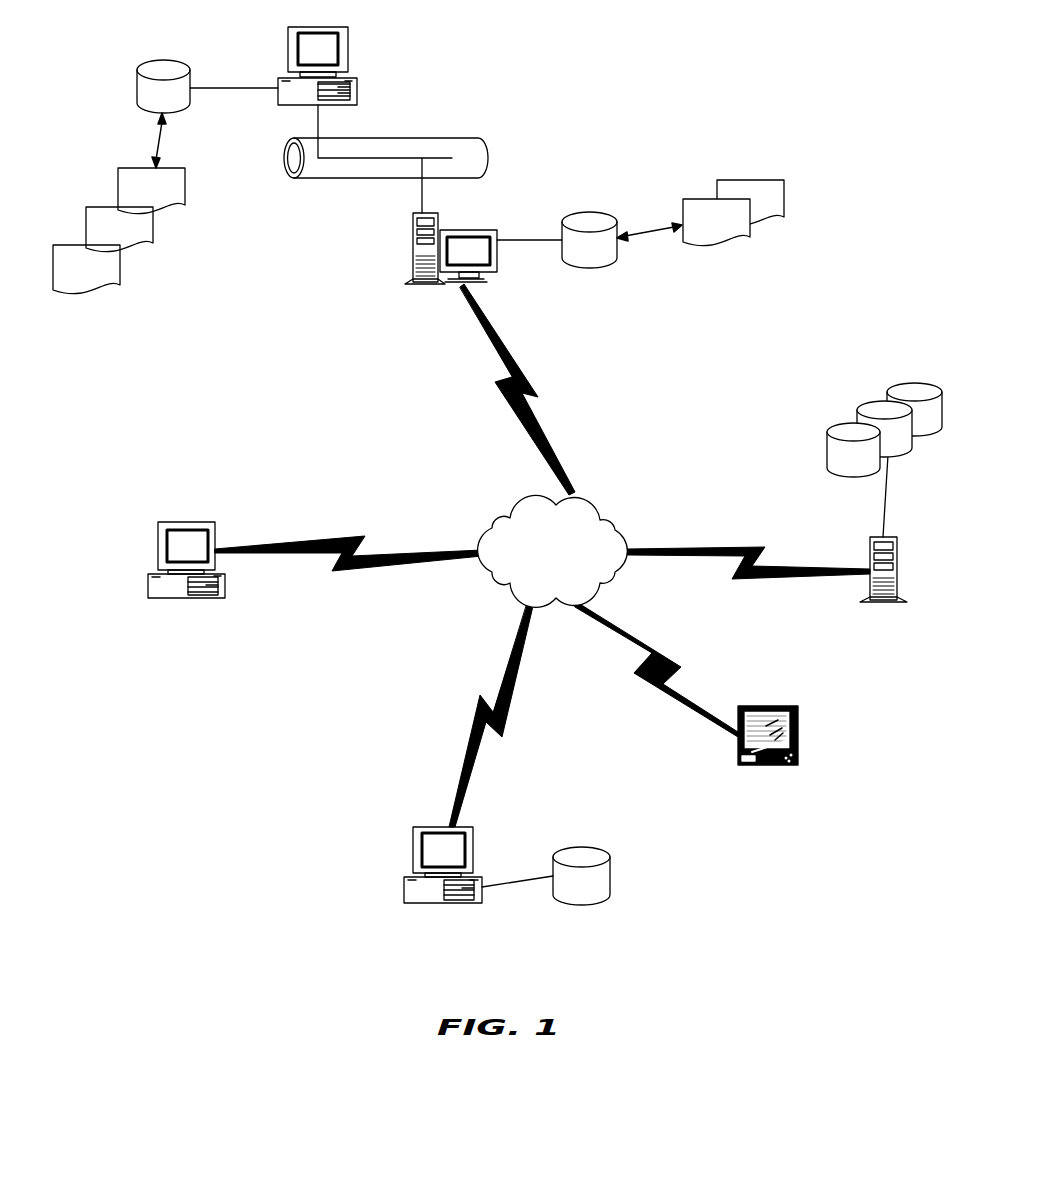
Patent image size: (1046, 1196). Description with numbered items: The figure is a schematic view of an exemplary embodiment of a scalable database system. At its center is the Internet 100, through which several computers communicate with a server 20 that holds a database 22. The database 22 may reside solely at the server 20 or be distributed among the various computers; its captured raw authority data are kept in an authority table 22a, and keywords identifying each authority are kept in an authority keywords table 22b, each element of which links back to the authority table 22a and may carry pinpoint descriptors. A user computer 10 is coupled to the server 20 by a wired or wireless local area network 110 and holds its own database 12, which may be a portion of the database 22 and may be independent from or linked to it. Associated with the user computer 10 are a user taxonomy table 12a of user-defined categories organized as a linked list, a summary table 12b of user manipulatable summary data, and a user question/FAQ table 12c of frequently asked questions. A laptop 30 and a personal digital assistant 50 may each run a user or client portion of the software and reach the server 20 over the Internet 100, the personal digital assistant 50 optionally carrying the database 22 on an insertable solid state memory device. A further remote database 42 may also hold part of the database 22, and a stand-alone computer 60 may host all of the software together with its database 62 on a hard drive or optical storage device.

The user computer 10 is at (348, 32).
The database 12 is at (137, 86).
The user taxonomy table 12a is at (120, 288).
The summary table 12b is at (153, 243).
The user question/FAQ table 12c is at (185, 195).
The local area network 110 is at (488, 148).
The server 20 is at (417, 285).
The database 22 is at (590, 267).
The authority table 22a is at (745, 240).
The authority keywords table 22b is at (750, 190).
The Internet 100 is at (510, 590).
The laptop 30 is at (148, 583).
The database 42 is at (827, 440).
The personal digital assistant 50 is at (775, 765).
The computer 60 is at (404, 892).
The database 62 is at (580, 905).